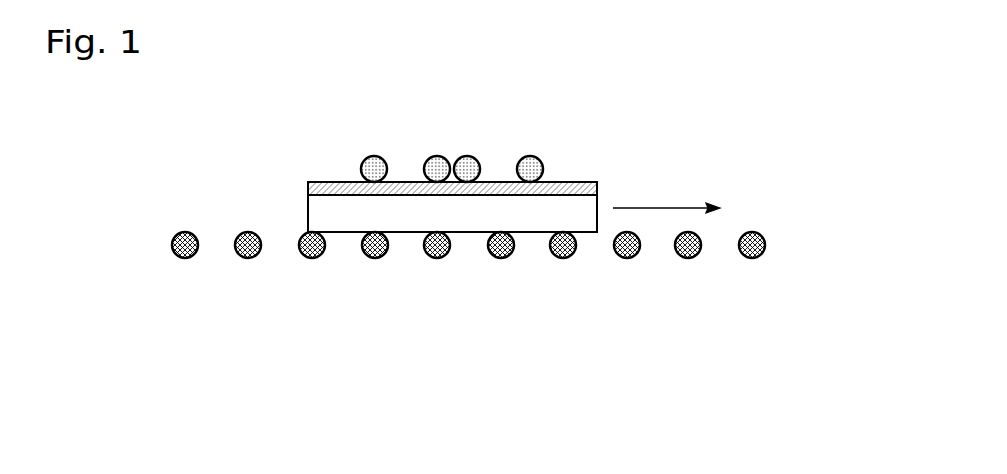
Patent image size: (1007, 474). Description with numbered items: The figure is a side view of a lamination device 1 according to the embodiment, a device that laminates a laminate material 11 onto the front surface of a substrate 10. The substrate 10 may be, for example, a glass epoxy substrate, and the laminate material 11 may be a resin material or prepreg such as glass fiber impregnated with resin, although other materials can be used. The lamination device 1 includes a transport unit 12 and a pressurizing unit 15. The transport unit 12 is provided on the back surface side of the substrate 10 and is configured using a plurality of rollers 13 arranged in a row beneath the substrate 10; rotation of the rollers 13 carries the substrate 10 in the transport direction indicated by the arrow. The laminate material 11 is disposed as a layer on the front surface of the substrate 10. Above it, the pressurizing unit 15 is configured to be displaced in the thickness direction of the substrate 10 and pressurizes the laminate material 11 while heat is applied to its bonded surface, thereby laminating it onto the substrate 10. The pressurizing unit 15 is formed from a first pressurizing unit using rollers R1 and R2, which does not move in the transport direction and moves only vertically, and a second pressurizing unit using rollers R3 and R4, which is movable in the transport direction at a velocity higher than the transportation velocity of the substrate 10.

The lamination device 1 is at (627, 70).
The substrate 10 is at (307, 213).
The laminate material 11 is at (307, 187).
The transport unit 12 is at (660, 287).
The rollers 13 is at (180, 258).
The pressurizing unit 15 is at (335, 110).
The roller R1 is at (374, 152).
The roller R2 is at (434, 152).
The roller R3 is at (469, 152).
The roller R4 is at (530, 152).